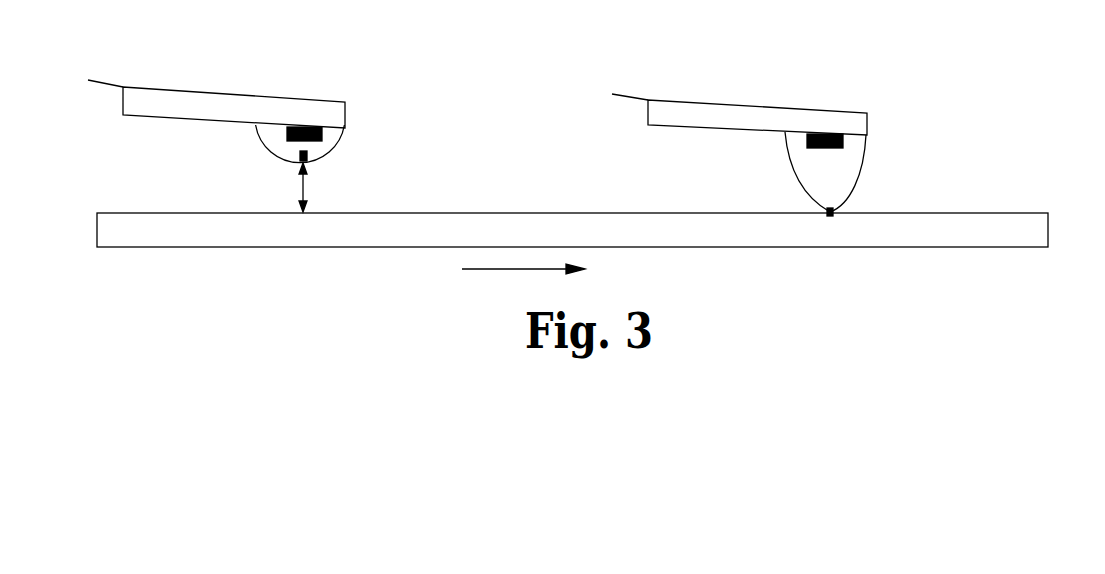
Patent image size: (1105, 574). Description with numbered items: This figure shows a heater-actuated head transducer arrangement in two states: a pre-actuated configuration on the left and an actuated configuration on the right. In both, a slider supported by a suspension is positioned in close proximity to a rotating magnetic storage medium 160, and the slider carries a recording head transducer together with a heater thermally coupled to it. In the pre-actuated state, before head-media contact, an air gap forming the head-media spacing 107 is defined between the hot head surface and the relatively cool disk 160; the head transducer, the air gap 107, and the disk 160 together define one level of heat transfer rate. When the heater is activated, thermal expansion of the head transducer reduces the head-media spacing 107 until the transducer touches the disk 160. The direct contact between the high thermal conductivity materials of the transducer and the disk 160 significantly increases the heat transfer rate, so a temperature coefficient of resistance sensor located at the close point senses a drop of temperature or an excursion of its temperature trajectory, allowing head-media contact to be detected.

The head-media spacing 107 is at (306, 181).
The magnetic storage medium 160 is at (942, 240).